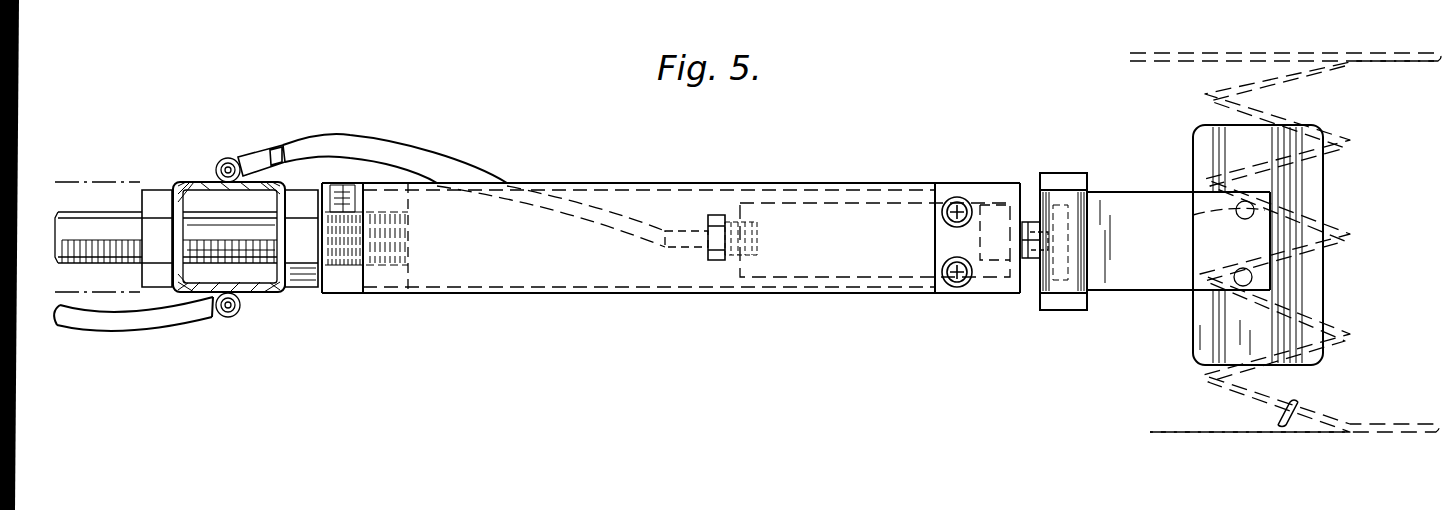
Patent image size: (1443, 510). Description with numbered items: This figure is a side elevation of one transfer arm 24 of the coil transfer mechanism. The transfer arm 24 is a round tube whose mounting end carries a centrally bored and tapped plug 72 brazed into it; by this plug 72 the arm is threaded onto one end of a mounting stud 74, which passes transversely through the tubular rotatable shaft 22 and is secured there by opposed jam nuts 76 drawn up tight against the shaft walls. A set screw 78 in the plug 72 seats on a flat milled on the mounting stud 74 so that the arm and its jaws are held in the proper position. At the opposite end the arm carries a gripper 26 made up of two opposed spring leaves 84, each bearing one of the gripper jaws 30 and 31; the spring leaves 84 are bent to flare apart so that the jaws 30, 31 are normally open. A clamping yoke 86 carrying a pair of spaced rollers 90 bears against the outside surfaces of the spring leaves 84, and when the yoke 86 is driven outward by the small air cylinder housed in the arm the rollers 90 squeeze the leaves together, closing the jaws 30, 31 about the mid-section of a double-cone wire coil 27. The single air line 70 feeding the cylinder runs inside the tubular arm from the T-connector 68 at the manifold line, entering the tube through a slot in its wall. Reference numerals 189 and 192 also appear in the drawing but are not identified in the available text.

The rotatable shaft 22 is at (196, 182).
The transfer arm 24 is at (633, 183).
The gripper 26 is at (1128, 159).
The double-cone wire coil 27 is at (1295, 53).
The gripper jaw 30 is at (1310, 126).
The gripper jaw 31 is at (1317, 210).
The T-connector 68 is at (237, 159).
The air line 70 is at (365, 135).
The plug 72 is at (352, 289).
The mounting stud 74 is at (260, 265).
The jam nut 76 is at (307, 284).
The set screw 78 is at (350, 197).
The spring leaf 84 is at (1127, 291).
The clamping yoke 86 is at (1063, 173).
The roller 90 is at (1083, 233).
The cavity 189 is at (820, 205).
The bracket 192 is at (1040, 220).